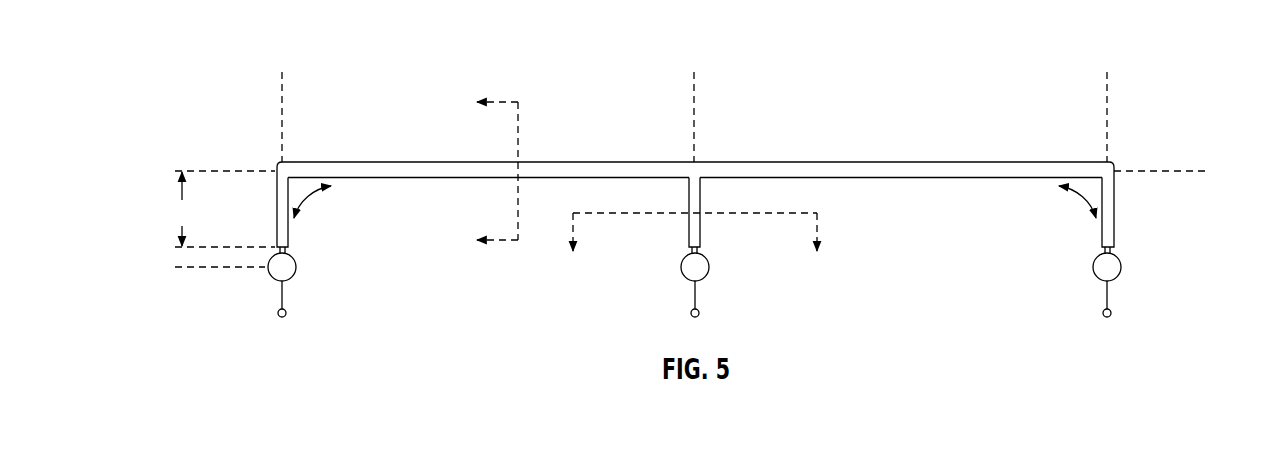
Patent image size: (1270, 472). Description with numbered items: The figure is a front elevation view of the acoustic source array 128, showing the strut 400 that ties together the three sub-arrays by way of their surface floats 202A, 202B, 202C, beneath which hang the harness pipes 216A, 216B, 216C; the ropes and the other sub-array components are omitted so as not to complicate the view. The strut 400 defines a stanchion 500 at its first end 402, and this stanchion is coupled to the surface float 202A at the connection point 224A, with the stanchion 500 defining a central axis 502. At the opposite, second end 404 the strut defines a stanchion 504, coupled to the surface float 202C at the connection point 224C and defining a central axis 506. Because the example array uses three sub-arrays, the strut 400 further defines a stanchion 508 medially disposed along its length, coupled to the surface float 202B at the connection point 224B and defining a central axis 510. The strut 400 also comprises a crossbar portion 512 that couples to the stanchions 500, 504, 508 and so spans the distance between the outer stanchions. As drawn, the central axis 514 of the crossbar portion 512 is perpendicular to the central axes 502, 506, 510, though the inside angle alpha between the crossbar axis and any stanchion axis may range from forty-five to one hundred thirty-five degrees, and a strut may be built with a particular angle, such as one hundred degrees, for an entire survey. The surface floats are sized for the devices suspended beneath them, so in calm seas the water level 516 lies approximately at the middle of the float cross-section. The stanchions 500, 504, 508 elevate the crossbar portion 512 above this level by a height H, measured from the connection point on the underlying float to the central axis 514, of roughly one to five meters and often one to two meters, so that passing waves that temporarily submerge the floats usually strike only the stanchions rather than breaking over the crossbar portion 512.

The acoustic source array 128 is at (240, 89).
The strut 400 is at (695, 132).
The first end 402 is at (277, 163).
The second end 404 is at (1114, 163).
The stanchion 500 is at (277, 209).
The central axis 502 is at (283, 110).
The stanchion 504 is at (1114, 206).
The central axis 506 is at (1108, 110).
The stanchion 508 is at (688, 223).
The central axis 510 is at (695, 110).
The crossbar portion 512 is at (597, 149).
The central axis 514 is at (1190, 171).
The water level 516 is at (216, 268).
The connection point 224A is at (291, 250).
The connection point 224B is at (703, 250).
The connection point 224C is at (1116, 250).
The surface float 202A is at (292, 278).
The surface float 202B is at (705, 278).
The surface float 202C is at (1117, 278).
The harness pipe 216A is at (286, 315).
The harness pipe 216B is at (699, 315).
The harness pipe 216C is at (1111, 315).